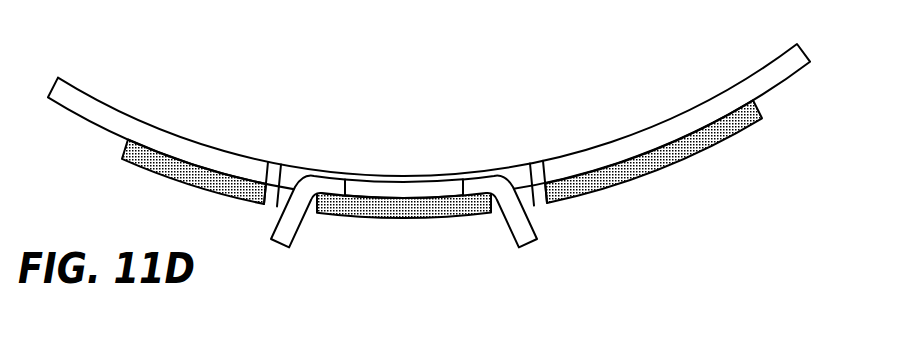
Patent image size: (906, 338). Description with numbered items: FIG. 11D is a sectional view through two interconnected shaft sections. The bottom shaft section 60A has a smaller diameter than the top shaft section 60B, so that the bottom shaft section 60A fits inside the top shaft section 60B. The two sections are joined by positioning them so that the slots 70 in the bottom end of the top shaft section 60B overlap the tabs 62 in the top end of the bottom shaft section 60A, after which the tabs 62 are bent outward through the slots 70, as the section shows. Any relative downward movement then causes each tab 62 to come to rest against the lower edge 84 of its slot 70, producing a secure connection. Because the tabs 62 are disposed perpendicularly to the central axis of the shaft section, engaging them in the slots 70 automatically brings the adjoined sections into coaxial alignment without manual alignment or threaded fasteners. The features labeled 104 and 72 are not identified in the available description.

The bottom shaft section 60A is at (191, 141).
The top shaft section 60B is at (166, 177).
The outer band right portion 104 is at (773, 80).
The right inner pad 72 is at (678, 157).
The slot 70 is at (270, 206).
The lower edge of slot 84 is at (273, 196).
The tab 62 is at (297, 232).